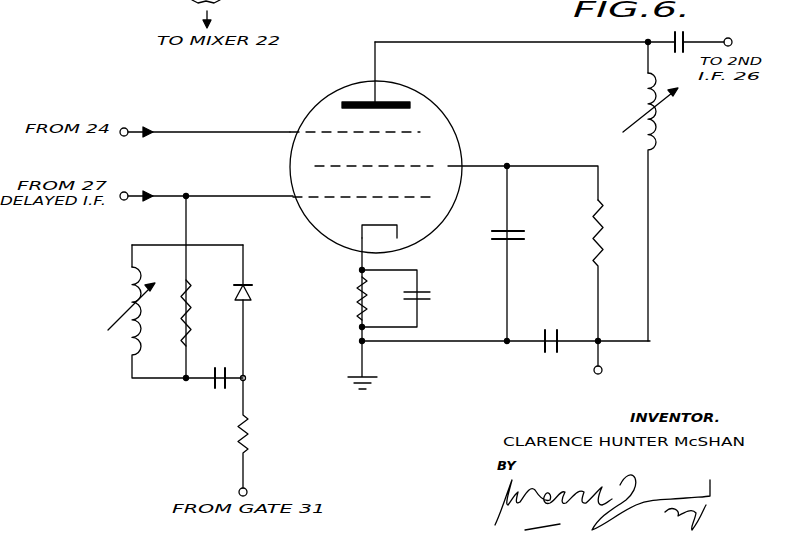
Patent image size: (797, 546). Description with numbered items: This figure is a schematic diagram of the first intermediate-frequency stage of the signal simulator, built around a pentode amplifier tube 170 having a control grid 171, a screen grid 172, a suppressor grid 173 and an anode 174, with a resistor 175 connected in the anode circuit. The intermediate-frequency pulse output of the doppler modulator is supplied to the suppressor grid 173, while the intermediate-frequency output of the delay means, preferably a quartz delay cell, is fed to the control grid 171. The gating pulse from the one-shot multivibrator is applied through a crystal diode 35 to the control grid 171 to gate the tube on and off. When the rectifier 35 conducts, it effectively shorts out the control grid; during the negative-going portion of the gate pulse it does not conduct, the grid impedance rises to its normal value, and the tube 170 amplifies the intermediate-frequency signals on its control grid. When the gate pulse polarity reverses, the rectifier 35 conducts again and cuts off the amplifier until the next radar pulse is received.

The pentode amplifier tube 170 is at (430, 100).
The control grid 171 is at (323, 200).
The screen grid 172 is at (312, 166).
The suppressor grid 173 is at (420, 132).
The anode 174 is at (385, 102).
The resistor 175 is at (597, 230).
The crystal diode 35 is at (255, 293).